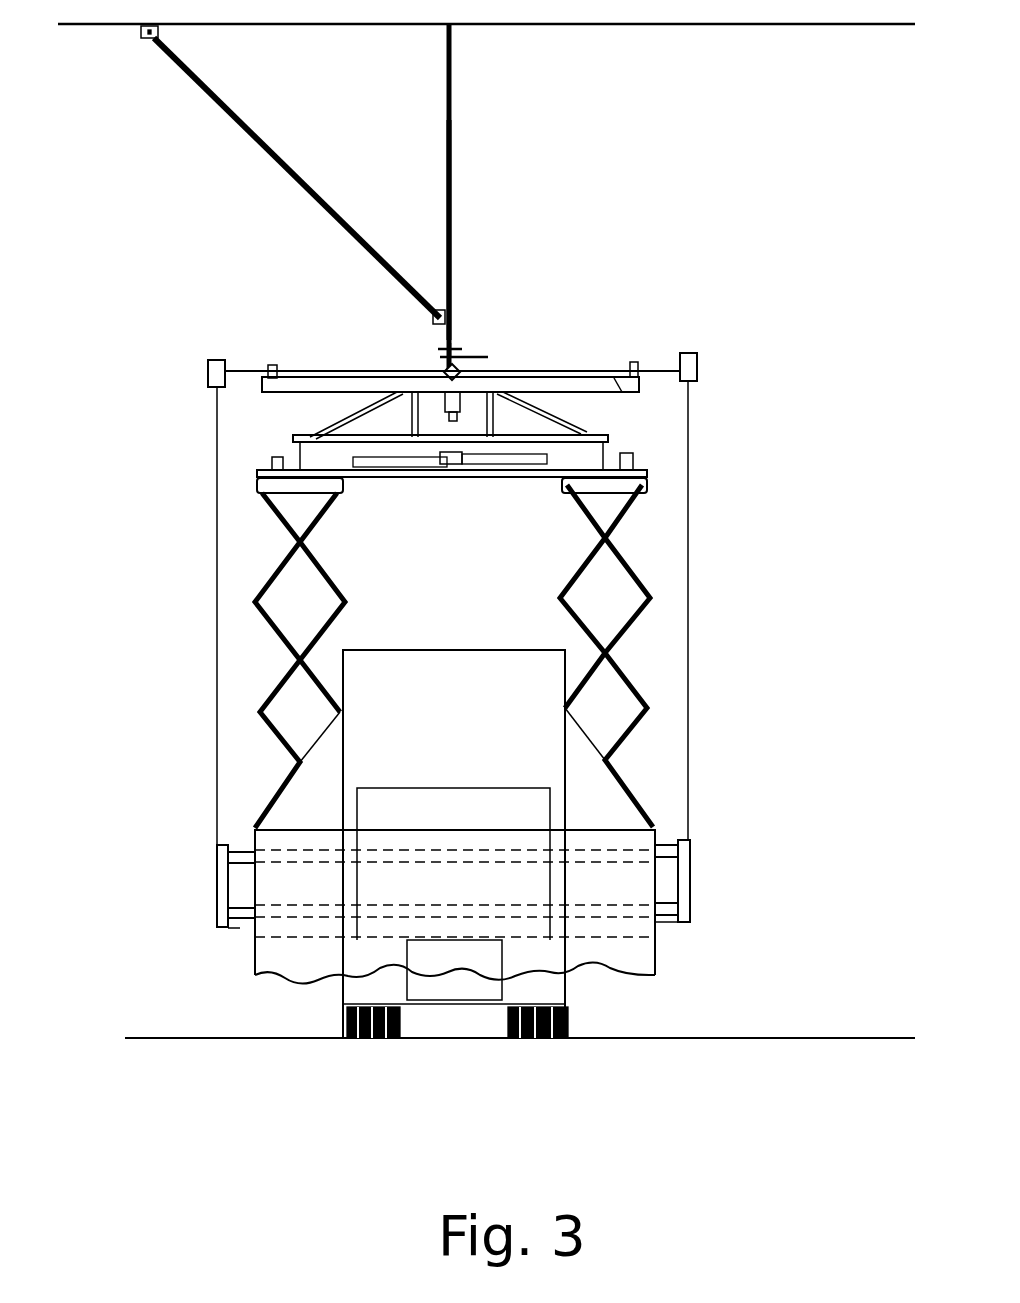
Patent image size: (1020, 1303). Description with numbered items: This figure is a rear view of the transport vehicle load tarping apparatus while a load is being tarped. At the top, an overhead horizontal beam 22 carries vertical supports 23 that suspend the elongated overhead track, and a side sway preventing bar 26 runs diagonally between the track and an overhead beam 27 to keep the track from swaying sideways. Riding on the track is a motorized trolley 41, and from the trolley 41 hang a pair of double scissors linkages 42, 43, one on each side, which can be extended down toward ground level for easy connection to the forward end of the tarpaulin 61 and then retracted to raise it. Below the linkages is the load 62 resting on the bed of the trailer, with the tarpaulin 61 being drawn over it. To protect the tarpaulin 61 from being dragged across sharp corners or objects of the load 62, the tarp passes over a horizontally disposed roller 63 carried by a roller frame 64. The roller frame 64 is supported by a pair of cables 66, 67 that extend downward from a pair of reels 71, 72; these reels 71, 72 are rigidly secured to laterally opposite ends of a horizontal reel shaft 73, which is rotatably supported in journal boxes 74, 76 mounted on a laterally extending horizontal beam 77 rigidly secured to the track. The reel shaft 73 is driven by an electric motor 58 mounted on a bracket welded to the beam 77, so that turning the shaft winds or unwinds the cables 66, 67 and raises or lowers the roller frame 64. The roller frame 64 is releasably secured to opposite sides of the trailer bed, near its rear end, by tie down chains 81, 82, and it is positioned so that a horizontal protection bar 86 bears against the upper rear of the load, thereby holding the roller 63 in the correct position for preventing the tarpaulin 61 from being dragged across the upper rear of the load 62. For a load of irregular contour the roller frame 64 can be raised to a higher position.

The horizontal beam 22 is at (455, 28).
The vertical supports 23 is at (455, 205).
The side sway preventing bars 26 is at (287, 170).
The overhead beam 27 is at (143, 38).
The motorized trolley 41 is at (330, 413).
The double scissors linkage 42 is at (280, 548).
The double scissors linkage 43 is at (647, 585).
The electric motor 58 is at (440, 357).
The tarpaulin 61 is at (608, 957).
The load 62 is at (486, 790).
The roller 63 is at (690, 870).
The roller frame 64 is at (217, 885).
The cable 66 is at (216, 680).
The cable 67 is at (690, 707).
The reel 71 is at (214, 360).
The reel 72 is at (688, 353).
The reel shaft 73 is at (548, 377).
The journal box 74 is at (270, 365).
The journal box 76 is at (634, 362).
The horizontal beam 77 is at (618, 390).
The tie down chain 81 is at (245, 930).
The tie down chain 82 is at (680, 920).
The horizontal protection bar 86 is at (237, 928).